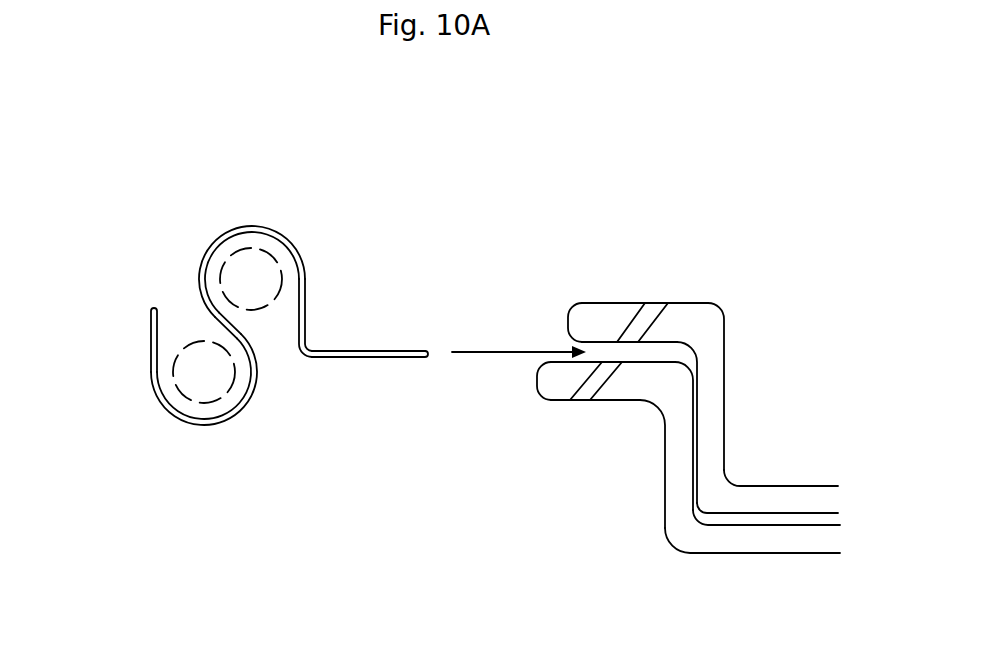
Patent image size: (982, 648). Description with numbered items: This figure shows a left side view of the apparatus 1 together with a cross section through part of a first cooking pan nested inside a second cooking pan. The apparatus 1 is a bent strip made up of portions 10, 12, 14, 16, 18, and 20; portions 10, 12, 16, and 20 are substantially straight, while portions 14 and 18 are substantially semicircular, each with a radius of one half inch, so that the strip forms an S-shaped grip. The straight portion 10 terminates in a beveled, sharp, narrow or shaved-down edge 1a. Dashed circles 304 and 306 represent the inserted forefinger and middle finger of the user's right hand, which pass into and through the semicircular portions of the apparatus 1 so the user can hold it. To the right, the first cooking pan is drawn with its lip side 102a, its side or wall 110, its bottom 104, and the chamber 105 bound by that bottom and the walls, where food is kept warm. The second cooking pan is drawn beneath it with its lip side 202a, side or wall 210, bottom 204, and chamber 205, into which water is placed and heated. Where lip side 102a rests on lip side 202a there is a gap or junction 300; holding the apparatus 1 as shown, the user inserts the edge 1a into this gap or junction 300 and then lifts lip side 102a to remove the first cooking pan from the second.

The apparatus 1 is at (350, 222).
The edge 1a is at (428, 356).
The portion 10 is at (371, 358).
The portion 12 is at (307, 296).
The portion 14 is at (251, 226).
The portion 16 is at (248, 341).
The portion 18 is at (238, 405).
The portion 20 is at (149, 356).
The dashed circle 304 is at (258, 258).
The dashed circle 306 is at (199, 348).
The lip side 102a is at (597, 313).
The side or wall 110 is at (712, 387).
The bottom 104 is at (769, 500).
The chamber 105 is at (803, 472).
The lip side 202a is at (560, 391).
The gap or junction 300 is at (640, 350).
The side or wall 210 is at (662, 482).
The bottom 204 is at (752, 544).
The chamber 205 is at (768, 519).